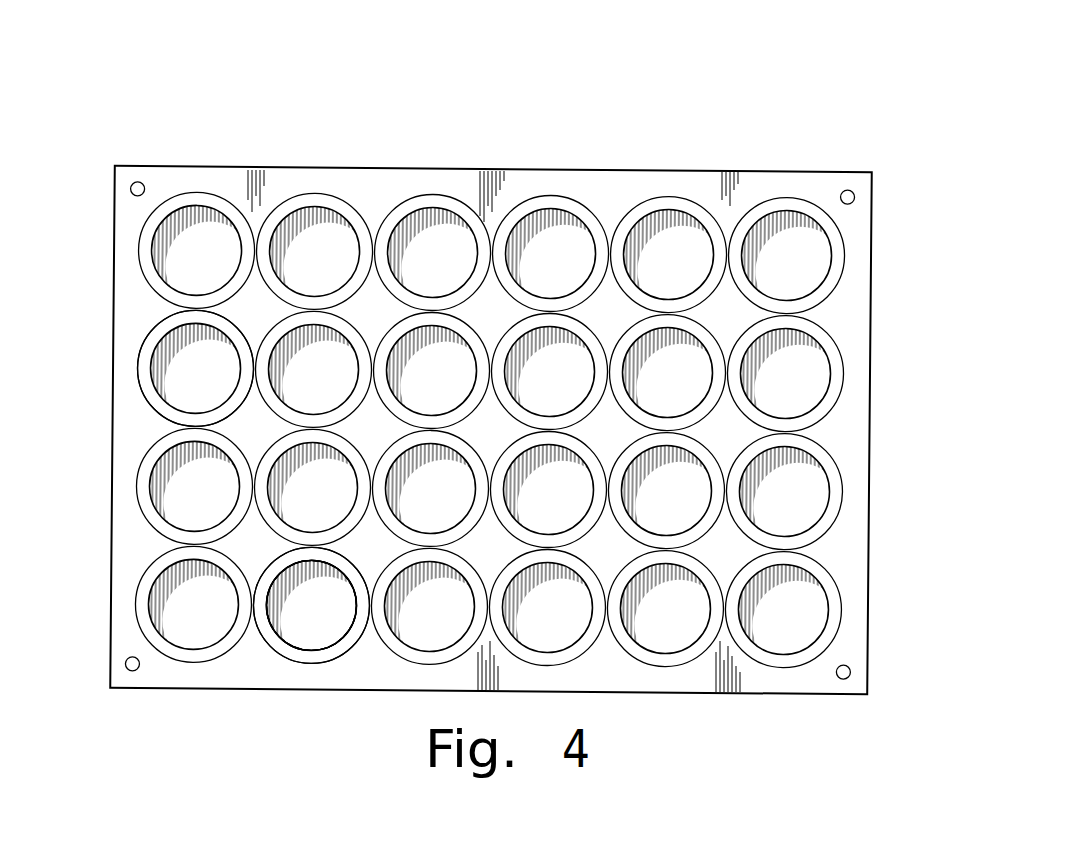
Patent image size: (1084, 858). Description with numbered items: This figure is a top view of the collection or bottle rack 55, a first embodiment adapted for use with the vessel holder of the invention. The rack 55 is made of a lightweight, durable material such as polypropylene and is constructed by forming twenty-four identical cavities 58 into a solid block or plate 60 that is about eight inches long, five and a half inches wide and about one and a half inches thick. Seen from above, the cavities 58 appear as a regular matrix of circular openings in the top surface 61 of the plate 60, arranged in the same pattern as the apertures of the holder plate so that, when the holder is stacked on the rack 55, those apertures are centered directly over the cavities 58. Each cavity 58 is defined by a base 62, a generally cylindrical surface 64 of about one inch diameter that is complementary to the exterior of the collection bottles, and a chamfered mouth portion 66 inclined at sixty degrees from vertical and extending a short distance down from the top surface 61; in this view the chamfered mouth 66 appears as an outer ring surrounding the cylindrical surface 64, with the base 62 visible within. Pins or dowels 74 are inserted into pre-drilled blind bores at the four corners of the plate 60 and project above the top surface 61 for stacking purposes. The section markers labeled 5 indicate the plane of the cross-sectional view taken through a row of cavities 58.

The collection rack 55 is at (876, 718).
The cavity 58 is at (206, 262).
The plate 60 is at (869, 318).
The top surface 61 is at (257, 422).
The base 62 is at (295, 615).
The cylindrical surface 64 is at (313, 640).
The chamfered mouth portion 66 is at (305, 655).
The pins 74 is at (130, 190).
The section line 5- 5 is at (118, 485).